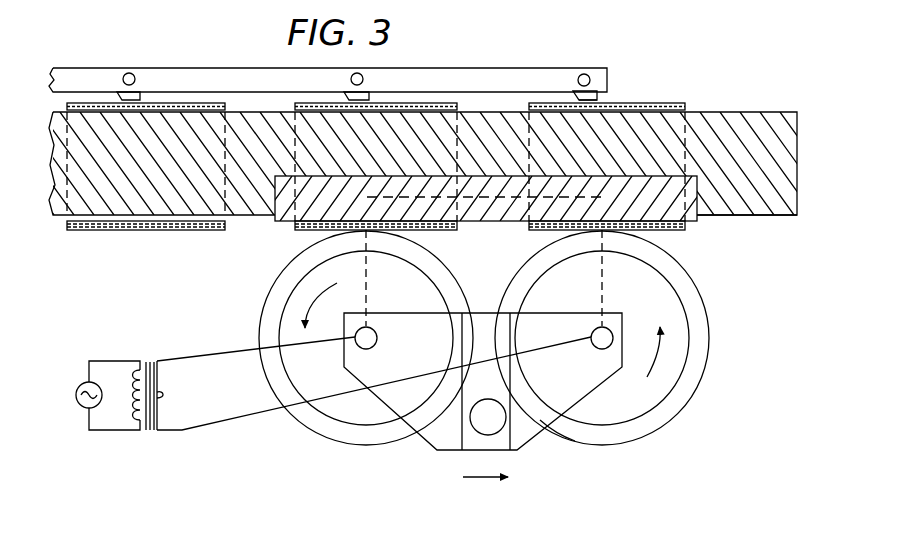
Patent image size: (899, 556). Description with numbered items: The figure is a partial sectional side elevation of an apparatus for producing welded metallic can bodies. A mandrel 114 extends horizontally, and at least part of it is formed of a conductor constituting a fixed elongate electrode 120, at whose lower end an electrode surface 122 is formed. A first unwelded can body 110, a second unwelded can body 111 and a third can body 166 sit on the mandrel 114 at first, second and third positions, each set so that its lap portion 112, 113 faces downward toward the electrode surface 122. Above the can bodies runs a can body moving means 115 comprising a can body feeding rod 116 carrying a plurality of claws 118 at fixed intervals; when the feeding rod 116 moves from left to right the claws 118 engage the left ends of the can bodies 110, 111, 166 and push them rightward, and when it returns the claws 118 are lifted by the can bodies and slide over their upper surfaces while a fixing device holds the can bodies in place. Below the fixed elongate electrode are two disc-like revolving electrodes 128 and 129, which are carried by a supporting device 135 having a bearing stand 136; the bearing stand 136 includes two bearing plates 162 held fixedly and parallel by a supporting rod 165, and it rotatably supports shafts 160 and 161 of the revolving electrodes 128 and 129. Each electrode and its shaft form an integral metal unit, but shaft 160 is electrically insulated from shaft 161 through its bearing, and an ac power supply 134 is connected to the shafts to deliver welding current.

The first unwelded can body 110 is at (672, 103).
The second unwelded can body 111 is at (445, 103).
The lap portion 112 is at (676, 232).
The lap portion 113 is at (440, 231).
The mandrel 114 is at (762, 112).
The can body moving means 115 is at (538, 63).
The can body feeding rod 116 is at (598, 90).
The claws 118 is at (592, 100).
The fixed elongate electrode 120 is at (705, 214).
The electrode surface 122 is at (529, 217).
The revolving electrode 128 is at (645, 447).
The revolving electrode 129 is at (333, 445).
The ac power supply 134 is at (110, 431).
The supporting device 135 is at (529, 458).
The bearing stand 136 is at (556, 434).
The shaft 160 is at (598, 349).
The shaft 161 is at (374, 346).
The bearing plates 162 is at (430, 440).
The supporting rod 165 is at (480, 434).
The third can body 166 is at (213, 103).